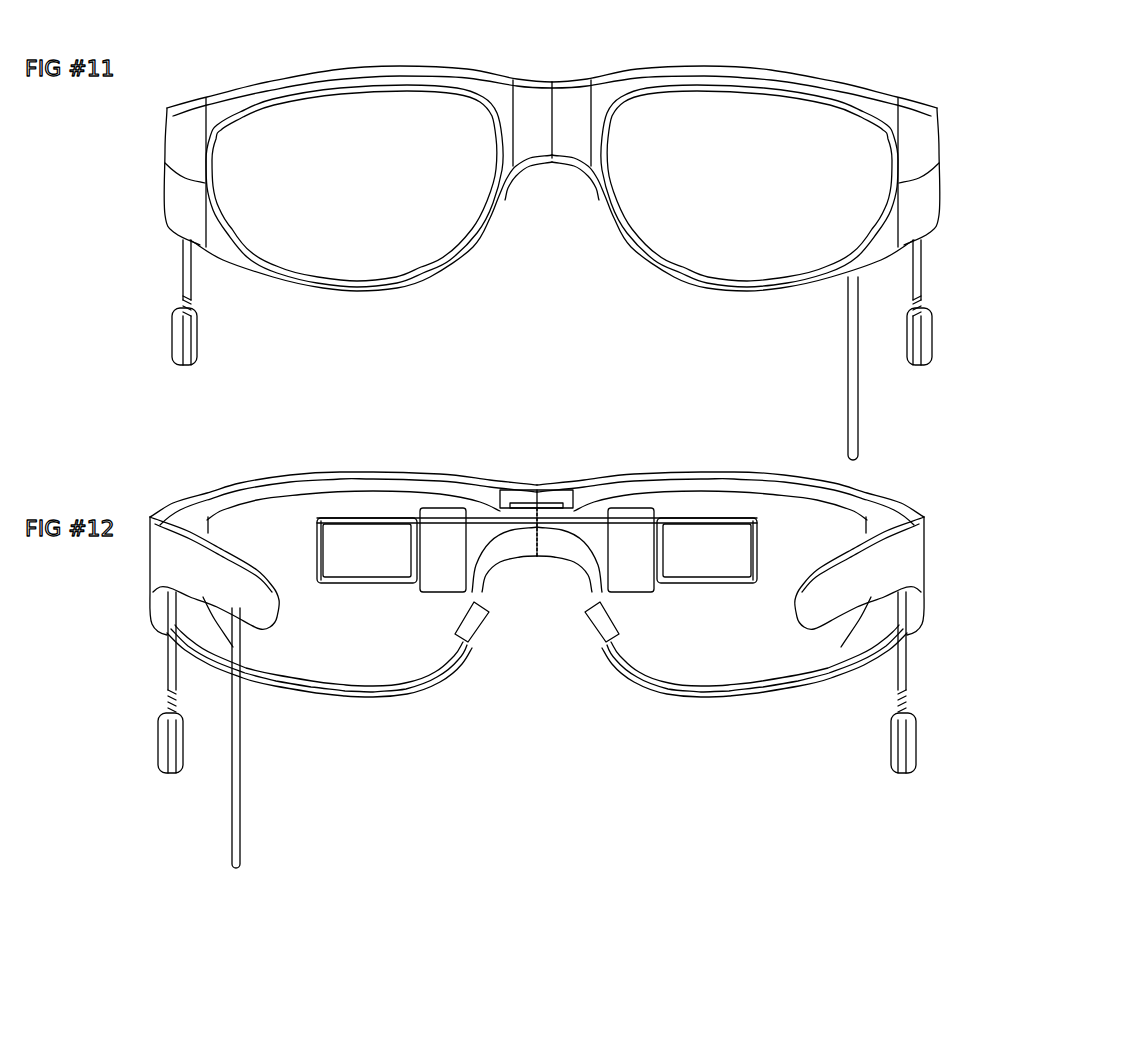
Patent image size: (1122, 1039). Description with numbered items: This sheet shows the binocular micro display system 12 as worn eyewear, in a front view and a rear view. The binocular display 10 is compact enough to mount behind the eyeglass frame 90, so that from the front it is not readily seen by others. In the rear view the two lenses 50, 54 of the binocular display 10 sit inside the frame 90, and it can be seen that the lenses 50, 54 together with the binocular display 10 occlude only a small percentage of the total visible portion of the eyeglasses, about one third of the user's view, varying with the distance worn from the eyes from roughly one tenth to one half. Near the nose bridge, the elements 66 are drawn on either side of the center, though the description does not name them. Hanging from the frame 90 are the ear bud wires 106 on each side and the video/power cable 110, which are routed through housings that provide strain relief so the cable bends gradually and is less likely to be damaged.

In FIG. 11, the binocular micro display system 12 is at (571, 242).
In FIG. 12, the binocular micro display system 12 is at (578, 640).
In FIG. 11, the eyeglass frame 90 is at (552, 70).
In FIG. 12, the eyeglass frame 90 is at (564, 488).
In FIG. 11, the ear bud wires 106 is at (550, 302).
In FIG. 12, the ear bud wires 106 is at (540, 682).
In FIG. 11, the video/power cable 110 is at (775, 368).
In FIG. 12, the video/power cable 110 is at (312, 738).
In FIG. 12, the lens 50 is at (344, 500).
In FIG. 12, the lens 54 is at (729, 506).
In FIG. 12, the binocular display 10 is at (556, 460).
In FIG. 12, the nose pad 66 is at (537, 662).